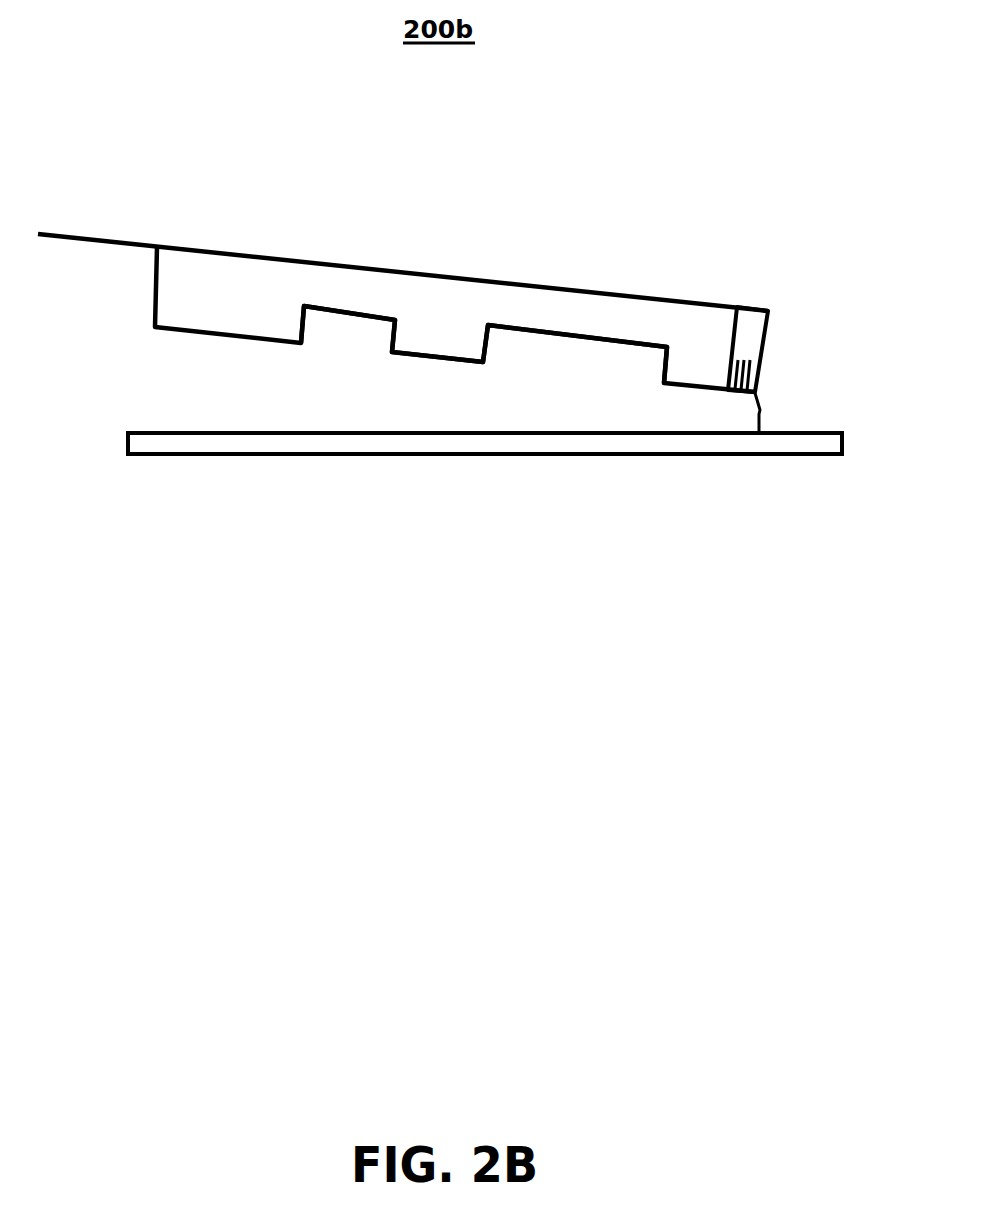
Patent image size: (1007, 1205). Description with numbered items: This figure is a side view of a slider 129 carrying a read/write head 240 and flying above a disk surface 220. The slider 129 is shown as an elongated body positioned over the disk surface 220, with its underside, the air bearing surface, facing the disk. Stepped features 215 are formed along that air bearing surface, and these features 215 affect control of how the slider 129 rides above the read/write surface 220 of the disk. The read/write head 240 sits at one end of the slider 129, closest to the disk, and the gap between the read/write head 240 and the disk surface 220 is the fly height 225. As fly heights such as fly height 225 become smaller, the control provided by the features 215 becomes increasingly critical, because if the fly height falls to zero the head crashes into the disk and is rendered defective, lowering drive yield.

The slider 129 is at (237, 252).
The features 215 is at (597, 350).
The read/write head 240 is at (755, 333).
The fly height 225 is at (777, 413).
The disk surface 220 is at (168, 432).